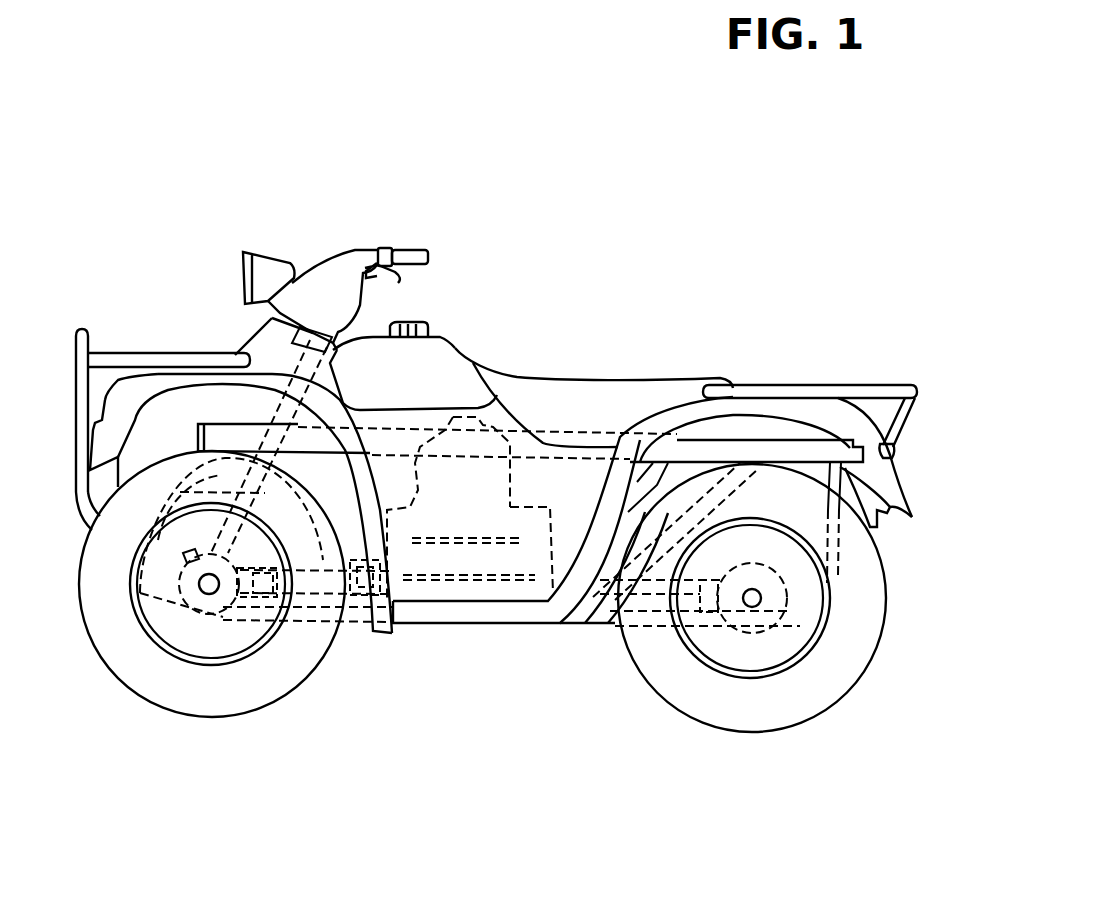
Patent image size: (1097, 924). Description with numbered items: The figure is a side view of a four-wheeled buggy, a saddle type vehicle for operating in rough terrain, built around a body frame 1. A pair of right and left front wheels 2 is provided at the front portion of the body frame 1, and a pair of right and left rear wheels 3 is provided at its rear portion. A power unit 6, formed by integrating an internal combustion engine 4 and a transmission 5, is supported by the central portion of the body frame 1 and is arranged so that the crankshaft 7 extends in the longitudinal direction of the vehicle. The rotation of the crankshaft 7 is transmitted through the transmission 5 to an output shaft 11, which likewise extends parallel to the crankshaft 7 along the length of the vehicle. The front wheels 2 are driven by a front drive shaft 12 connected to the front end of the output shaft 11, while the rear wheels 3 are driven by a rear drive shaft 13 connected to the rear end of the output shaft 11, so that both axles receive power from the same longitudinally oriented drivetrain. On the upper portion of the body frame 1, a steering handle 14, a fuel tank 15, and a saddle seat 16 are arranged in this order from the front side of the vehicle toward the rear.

The body frame 1 is at (743, 452).
The front wheels 2 is at (188, 703).
The rear wheels 3 is at (768, 710).
The internal combustion engine 4 is at (457, 467).
The transmission 5 is at (552, 500).
The power unit 6 is at (529, 357).
The crankshaft 7 is at (445, 543).
The output shaft 11 is at (497, 580).
The front drive shaft 12 is at (302, 587).
The rear drive shaft 13 is at (643, 593).
The steering handle 14 is at (410, 247).
The fuel tank 15 is at (443, 347).
The saddle seat 16 is at (652, 388).